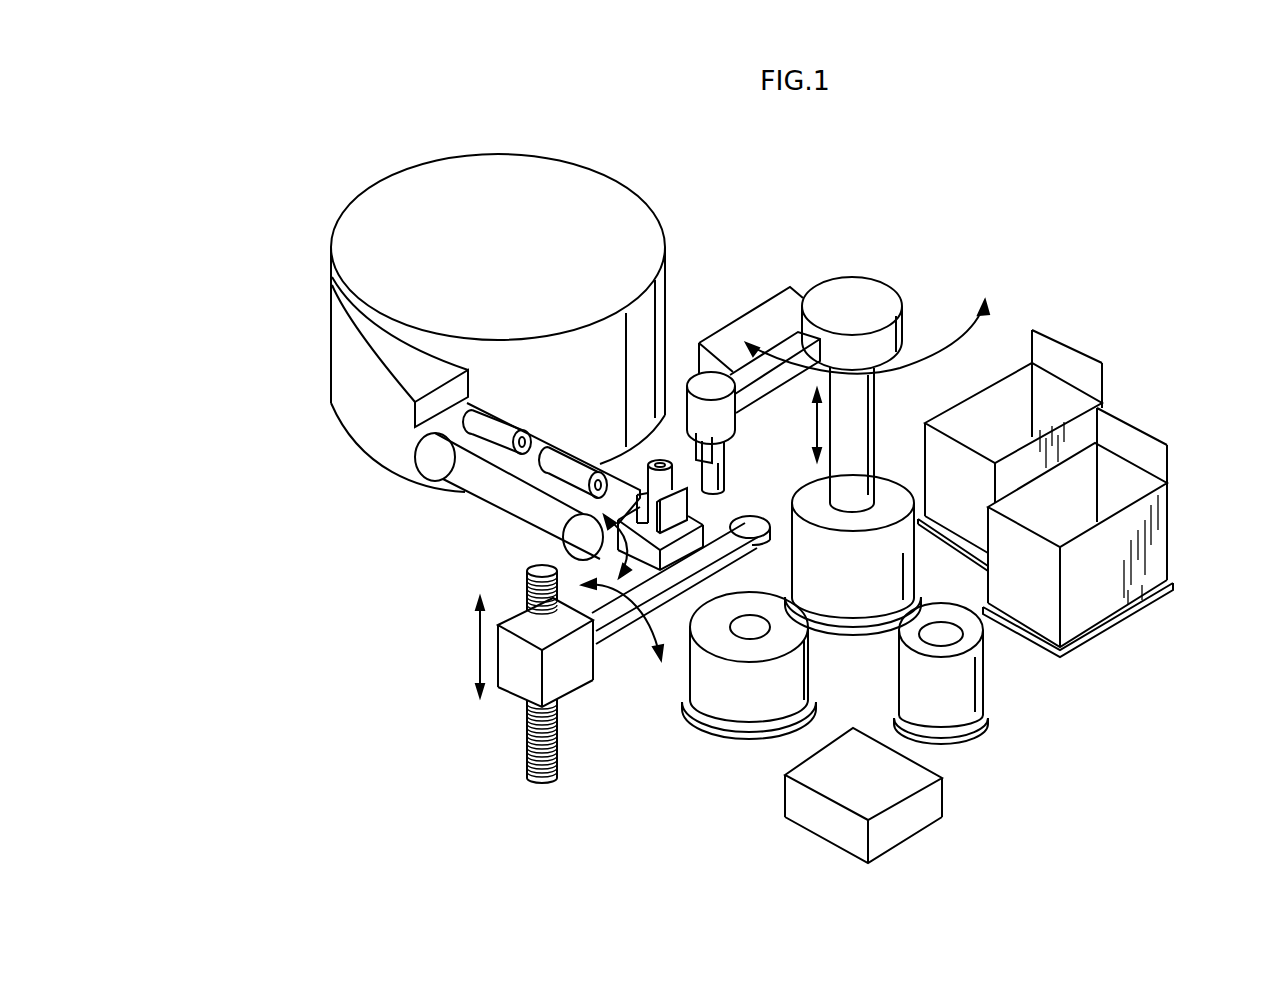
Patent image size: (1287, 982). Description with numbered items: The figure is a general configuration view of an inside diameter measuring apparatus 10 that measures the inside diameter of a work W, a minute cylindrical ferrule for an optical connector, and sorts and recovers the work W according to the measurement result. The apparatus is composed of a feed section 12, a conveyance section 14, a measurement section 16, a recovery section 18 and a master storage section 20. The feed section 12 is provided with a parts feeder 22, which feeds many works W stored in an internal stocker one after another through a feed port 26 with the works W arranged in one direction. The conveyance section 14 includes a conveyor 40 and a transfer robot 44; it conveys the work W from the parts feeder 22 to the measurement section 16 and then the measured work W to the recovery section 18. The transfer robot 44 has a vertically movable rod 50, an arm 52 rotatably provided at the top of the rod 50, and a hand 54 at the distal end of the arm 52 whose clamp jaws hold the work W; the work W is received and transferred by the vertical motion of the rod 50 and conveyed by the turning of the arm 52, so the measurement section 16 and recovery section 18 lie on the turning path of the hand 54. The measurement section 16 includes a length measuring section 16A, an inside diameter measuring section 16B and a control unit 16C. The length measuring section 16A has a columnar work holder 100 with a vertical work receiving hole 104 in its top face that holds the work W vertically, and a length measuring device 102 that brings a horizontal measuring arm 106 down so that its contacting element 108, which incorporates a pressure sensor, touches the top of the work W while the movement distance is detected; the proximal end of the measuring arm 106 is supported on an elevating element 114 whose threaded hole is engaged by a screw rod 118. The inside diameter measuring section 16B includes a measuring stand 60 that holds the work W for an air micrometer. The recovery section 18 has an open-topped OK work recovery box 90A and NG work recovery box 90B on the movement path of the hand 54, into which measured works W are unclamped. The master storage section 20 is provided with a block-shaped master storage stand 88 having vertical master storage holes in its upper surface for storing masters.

The inside diameter measuring apparatus 10 is at (960, 197).
The feed section 12 is at (324, 352).
The conveyance section 14 is at (620, 433).
The measurement section 16 is at (1058, 756).
The length measuring section 16A is at (650, 783).
The inside diameter measuring section 16B is at (1010, 675).
The control unit 16C is at (920, 808).
The recovery section 18 is at (1133, 340).
The master storage section 20 is at (705, 313).
The parts feeder 22 is at (345, 244).
The feed port 26 is at (422, 410).
The conveyor 40 is at (513, 470).
The transfer robot 44 is at (898, 280).
The rod 50 is at (860, 437).
The arm 52 is at (790, 347).
The hand 54 is at (740, 423).
The measuring stand 60 is at (968, 685).
The master storage stand 88 is at (733, 322).
The OK work recovery box 90A is at (1152, 443).
The NG work recovery box 90B is at (1070, 345).
The work holder 100 is at (733, 695).
The length measuring device 102 is at (520, 766).
The work receiving hole 104 is at (760, 626).
The measuring arm 106 is at (618, 628).
The contacting element 108 is at (758, 525).
The elevating element 114 is at (573, 685).
The screw rod 118 is at (522, 730).
The work W is at (500, 422).